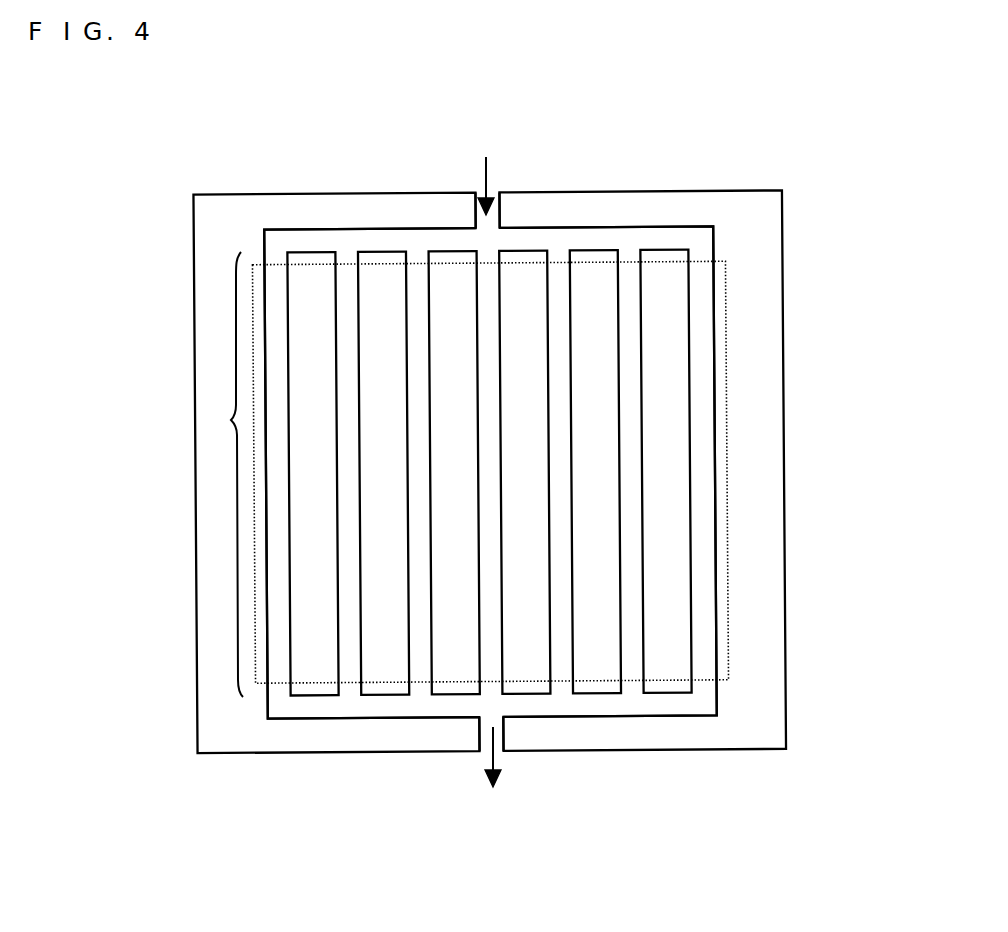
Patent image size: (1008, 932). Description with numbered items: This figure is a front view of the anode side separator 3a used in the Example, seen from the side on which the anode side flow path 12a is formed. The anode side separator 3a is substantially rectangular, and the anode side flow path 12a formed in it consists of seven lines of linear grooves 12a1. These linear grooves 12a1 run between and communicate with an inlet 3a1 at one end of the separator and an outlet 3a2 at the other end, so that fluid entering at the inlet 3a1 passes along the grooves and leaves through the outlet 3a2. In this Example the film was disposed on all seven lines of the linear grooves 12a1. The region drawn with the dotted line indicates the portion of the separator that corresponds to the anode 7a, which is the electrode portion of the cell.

The anode side separator 3a is at (733, 201).
The inlet 3a1 is at (500, 192).
The outlet 3a2 is at (480, 752).
The anode side flow path 12a is at (702, 492).
The linear grooves 12a1 is at (232, 420).
The anode 7a is at (728, 672).